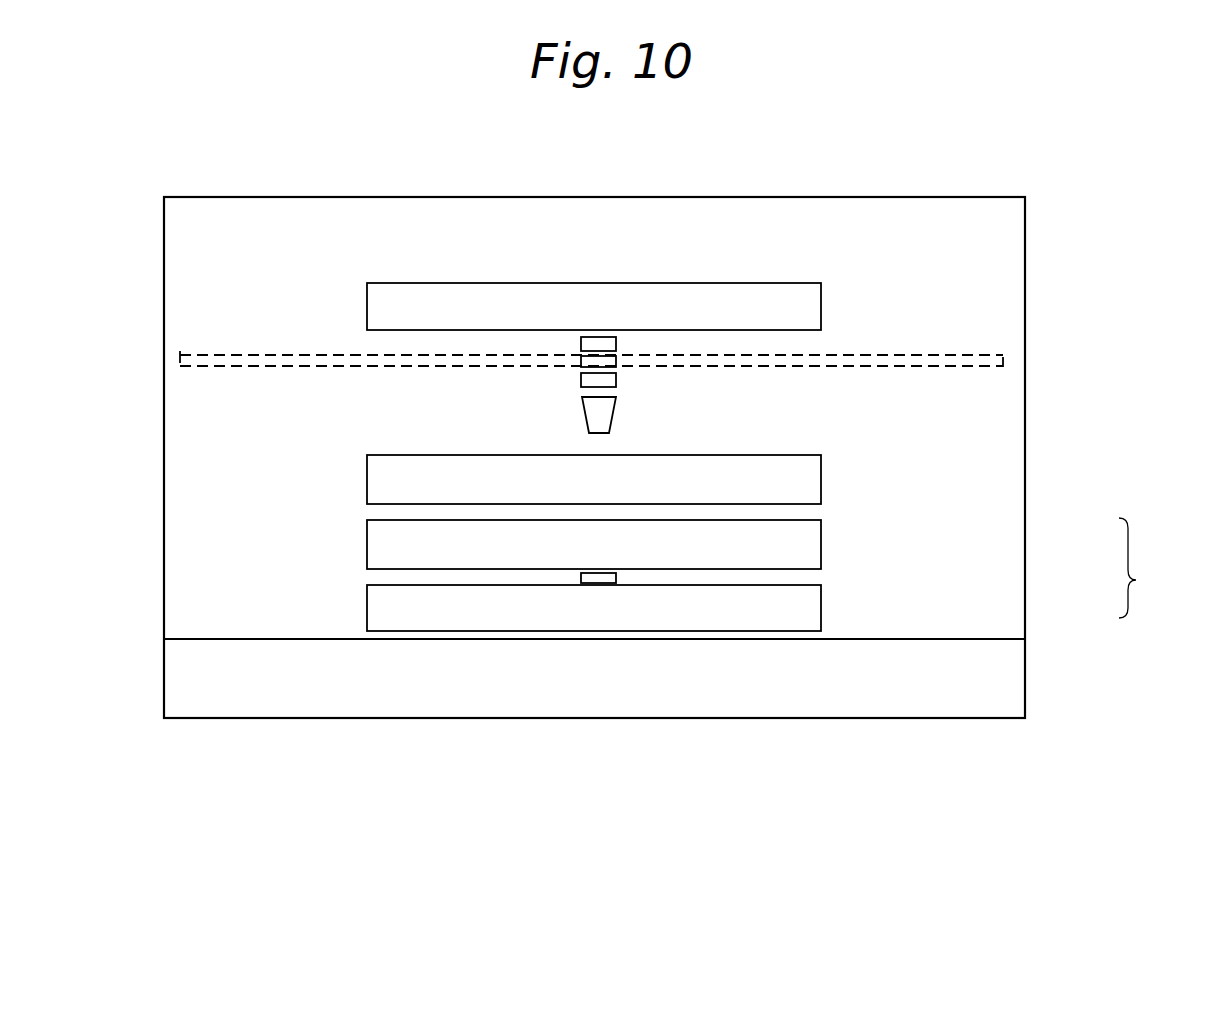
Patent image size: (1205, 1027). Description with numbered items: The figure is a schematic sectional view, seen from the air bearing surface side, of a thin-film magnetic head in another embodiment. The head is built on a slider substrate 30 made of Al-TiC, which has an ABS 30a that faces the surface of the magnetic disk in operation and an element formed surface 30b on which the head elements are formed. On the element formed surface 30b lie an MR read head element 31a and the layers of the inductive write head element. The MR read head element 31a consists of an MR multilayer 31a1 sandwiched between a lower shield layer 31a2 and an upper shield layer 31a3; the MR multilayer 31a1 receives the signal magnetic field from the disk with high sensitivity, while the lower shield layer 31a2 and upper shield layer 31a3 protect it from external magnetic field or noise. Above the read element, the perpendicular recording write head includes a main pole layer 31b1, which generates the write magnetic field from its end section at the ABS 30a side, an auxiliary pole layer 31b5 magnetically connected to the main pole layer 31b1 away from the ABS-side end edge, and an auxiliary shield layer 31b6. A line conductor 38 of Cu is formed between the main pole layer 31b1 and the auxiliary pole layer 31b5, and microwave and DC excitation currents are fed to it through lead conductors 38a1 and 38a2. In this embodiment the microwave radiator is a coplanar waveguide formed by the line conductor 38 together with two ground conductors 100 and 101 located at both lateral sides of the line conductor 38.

The slider substrate 30 is at (1012, 683).
The ABS 30a is at (240, 693).
The element formed surface 30b is at (208, 637).
The MR read head element 31a is at (1156, 568).
The MR multilayer 31a1 is at (605, 578).
The lower shield layer 31a2 is at (805, 610).
The upper shield layer 31a3 is at (808, 551).
The main pole layer 31b1 is at (605, 410).
The auxiliary pole layer 31b5 is at (808, 302).
The auxiliary shield layer 31b6 is at (800, 483).
The line conductor 38 is at (610, 360).
The lead conductor 38a1 is at (180, 357).
The lead conductor 38a2 is at (960, 360).
The ground conductor 100 is at (587, 381).
The ground conductor 101 is at (592, 343).